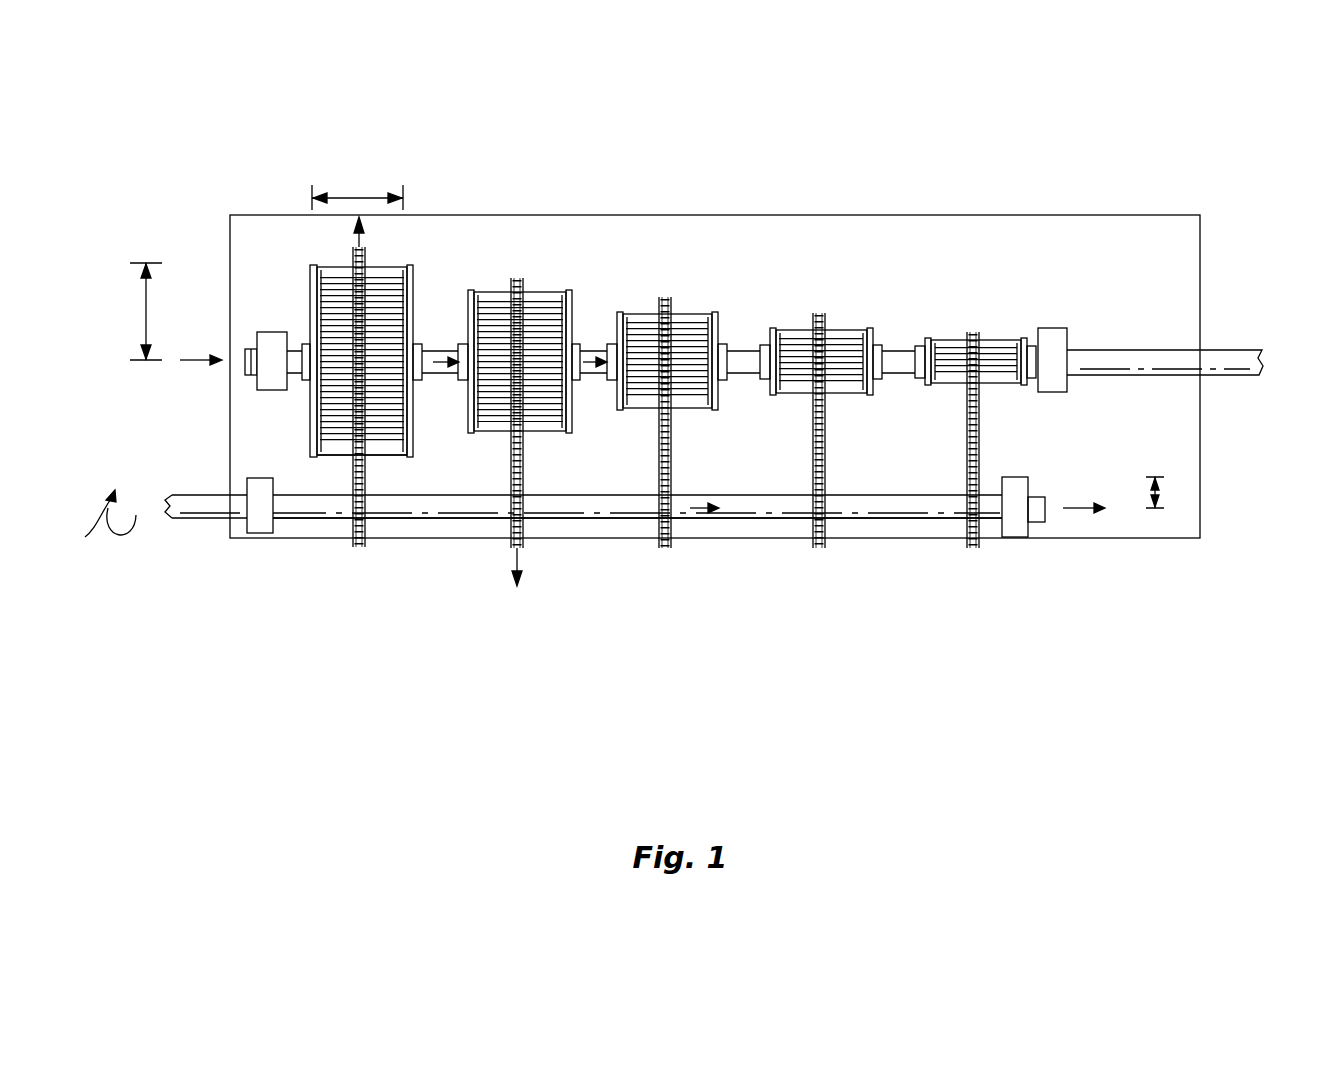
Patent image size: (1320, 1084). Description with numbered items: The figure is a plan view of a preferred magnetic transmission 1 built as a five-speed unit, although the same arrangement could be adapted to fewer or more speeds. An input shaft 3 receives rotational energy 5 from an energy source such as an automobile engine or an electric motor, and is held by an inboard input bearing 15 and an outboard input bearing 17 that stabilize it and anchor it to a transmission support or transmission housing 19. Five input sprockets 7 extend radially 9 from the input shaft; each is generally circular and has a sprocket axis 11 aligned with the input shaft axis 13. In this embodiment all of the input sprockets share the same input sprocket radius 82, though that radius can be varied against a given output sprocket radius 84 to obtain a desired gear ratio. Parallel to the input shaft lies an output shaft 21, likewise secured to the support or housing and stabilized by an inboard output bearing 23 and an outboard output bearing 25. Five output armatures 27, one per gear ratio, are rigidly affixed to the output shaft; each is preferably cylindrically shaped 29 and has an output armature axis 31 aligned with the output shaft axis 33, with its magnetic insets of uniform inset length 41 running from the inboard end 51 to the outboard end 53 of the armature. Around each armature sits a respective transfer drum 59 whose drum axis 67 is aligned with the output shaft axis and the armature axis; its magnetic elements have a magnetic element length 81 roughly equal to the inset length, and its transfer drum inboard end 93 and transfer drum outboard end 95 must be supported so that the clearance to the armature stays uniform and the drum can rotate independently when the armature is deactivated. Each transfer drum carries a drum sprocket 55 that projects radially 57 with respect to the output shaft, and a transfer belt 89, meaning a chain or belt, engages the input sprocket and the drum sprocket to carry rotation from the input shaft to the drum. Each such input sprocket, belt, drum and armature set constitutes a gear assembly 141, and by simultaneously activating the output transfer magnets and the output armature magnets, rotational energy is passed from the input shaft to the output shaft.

The magnetic transmission 1 is at (856, 216).
The input shaft 3 is at (187, 519).
The rotational energy 5 is at (103, 520).
The input sprocket 7 is at (609, 425).
The radial extension 9 is at (523, 566).
The sprocket axis 11 is at (688, 509).
The input shaft axis 13 is at (1077, 509).
The inboard input bearing 15 is at (281, 534).
The outboard input bearing 17 is at (1002, 537).
The transmission housing 19 is at (750, 537).
The output shaft 21 is at (1250, 350).
The inboard output bearing 23 is at (259, 332).
The outboard output bearing 25 is at (1050, 328).
The output armature 27 is at (309, 313).
The cylindrical shape 29 is at (577, 307).
The output armature axis 31 is at (592, 343).
The output shaft axis 33 is at (197, 361).
The inset length 41 is at (331, 136).
The inboard end 51 is at (551, 433).
The outboard end 53 is at (572, 418).
The drum sprocket 55 is at (665, 297).
The radial projection 57 is at (352, 243).
The transfer drum 59 is at (695, 313).
The drum axis 67 is at (433, 347).
The magnetic element length 81 is at (352, 197).
The input sprocket radius 82 is at (1162, 492).
The output sprocket radius 84 is at (146, 310).
The transfer belt 89 is at (393, 457).
The transfer drum inboard end 93 is at (546, 490).
The transfer drum outboard end 95 is at (412, 455).
The gear assembly 141 is at (349, 508).